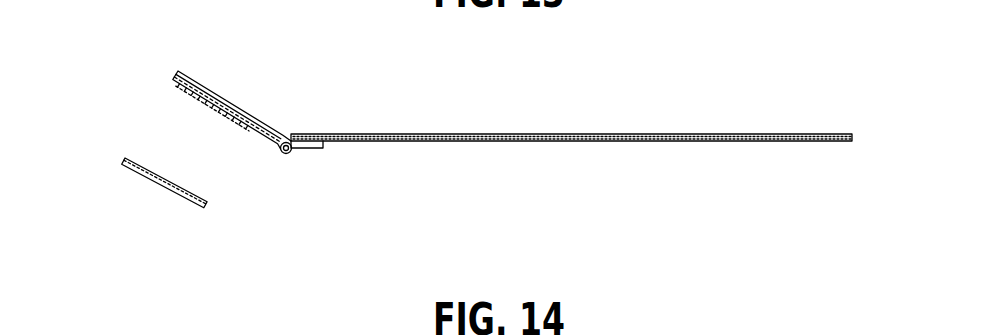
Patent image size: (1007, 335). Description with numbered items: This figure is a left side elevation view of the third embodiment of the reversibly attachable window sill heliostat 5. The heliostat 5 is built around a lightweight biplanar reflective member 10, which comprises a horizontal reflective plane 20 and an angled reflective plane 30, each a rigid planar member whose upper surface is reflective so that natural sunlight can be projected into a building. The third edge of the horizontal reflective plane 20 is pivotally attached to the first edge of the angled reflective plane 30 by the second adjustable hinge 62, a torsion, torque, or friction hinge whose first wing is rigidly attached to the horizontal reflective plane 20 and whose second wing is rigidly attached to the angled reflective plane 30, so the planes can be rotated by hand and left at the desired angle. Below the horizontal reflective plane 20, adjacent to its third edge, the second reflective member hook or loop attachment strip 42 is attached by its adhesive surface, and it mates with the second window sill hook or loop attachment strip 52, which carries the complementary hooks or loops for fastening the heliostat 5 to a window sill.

The reversibly attachable window sill heliostat 5 is at (104, 53).
The lightweight biplanar reflective member 10 is at (512, 133).
The horizontal reflective plane 20 is at (248, 108).
The angled reflective plane 30 is at (632, 134).
The second reflective member hook or loop attachment strip 42 is at (175, 87).
The second window sill hook or loop attachment strip 52 is at (155, 183).
The second adjustable hinge 62 is at (281, 154).